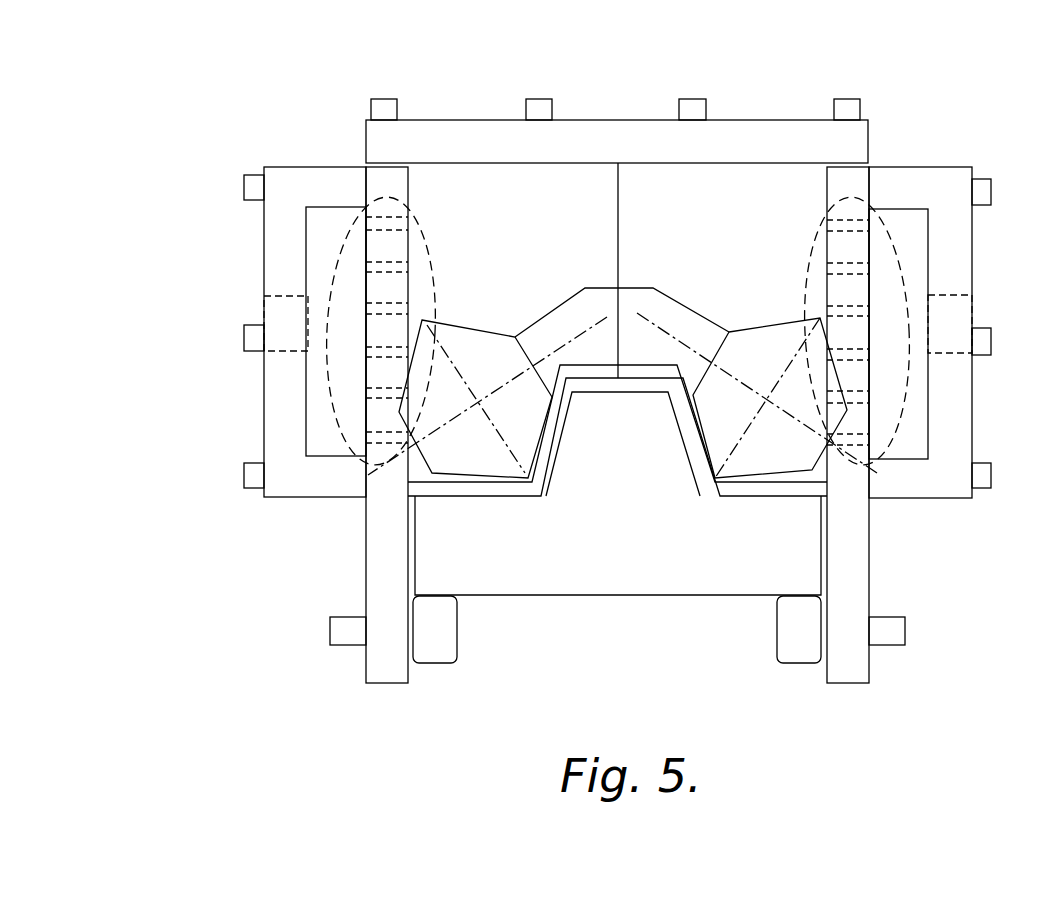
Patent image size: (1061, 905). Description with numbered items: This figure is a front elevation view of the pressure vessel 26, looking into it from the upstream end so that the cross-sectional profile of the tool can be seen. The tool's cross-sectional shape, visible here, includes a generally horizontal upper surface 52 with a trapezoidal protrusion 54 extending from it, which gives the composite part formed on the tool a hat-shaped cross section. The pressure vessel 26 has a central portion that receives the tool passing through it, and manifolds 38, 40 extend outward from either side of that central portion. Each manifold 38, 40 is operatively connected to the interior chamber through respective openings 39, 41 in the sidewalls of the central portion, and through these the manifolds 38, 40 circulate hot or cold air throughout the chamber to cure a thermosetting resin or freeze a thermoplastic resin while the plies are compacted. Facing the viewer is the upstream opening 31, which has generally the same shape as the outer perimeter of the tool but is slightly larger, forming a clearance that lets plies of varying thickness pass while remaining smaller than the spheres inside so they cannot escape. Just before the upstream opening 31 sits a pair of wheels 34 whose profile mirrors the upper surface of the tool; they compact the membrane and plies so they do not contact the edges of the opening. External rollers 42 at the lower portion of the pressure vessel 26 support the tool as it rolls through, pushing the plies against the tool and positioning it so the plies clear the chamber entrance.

The pressure vessel 26 is at (297, 99).
The upstream opening 31 is at (457, 492).
The wheels 34 is at (452, 322).
The manifold 38 is at (283, 255).
The opening 39 is at (327, 372).
The manifold 40 is at (952, 398).
The opening 41 is at (897, 265).
The external rollers 42 is at (436, 657).
The upper surface 52 is at (787, 497).
The trapezoidal protrusion 54 is at (652, 452).